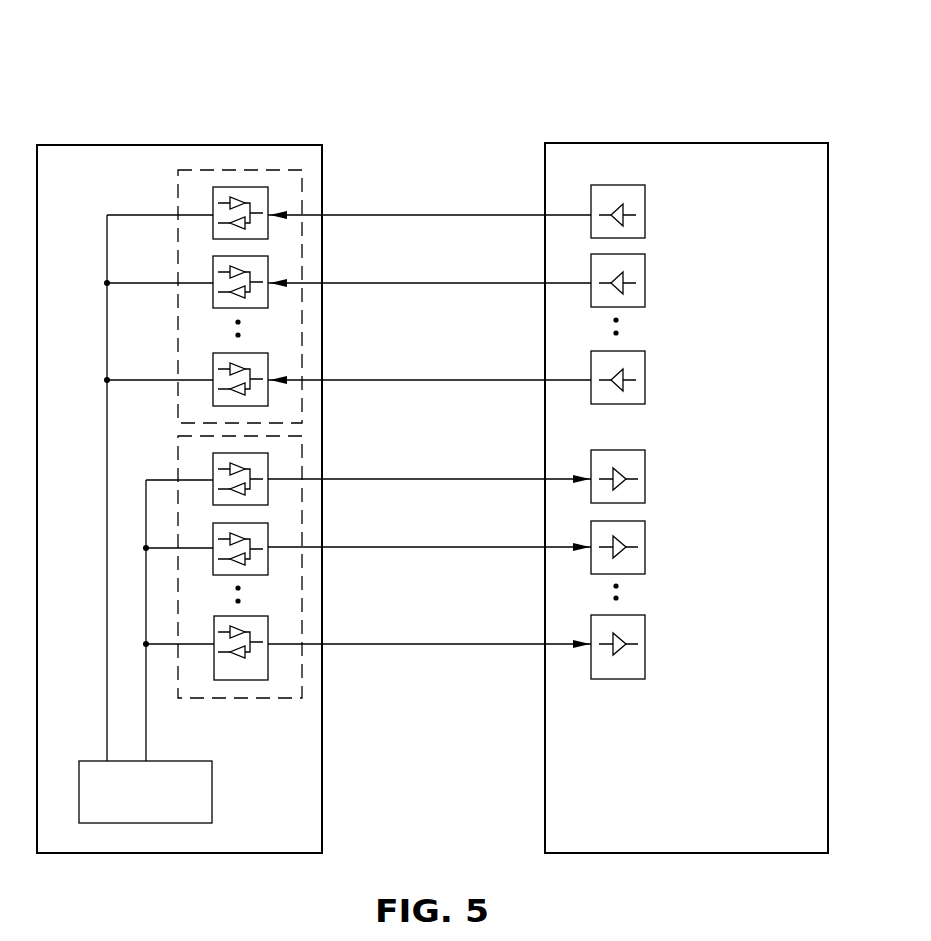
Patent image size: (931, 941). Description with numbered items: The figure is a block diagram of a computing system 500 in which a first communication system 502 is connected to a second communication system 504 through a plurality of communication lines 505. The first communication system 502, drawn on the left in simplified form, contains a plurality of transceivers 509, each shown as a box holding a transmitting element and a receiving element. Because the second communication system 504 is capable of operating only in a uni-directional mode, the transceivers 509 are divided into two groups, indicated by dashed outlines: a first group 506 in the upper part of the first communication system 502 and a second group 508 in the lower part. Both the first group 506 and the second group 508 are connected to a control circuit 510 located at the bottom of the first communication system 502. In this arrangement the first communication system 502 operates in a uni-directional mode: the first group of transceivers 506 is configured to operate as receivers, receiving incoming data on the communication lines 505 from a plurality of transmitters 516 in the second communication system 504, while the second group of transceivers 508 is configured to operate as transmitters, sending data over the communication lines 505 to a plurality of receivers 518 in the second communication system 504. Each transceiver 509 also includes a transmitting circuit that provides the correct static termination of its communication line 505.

The computing system 500 is at (740, 66).
The first communication system 502 is at (176, 145).
The second communication system 504 is at (684, 143).
The communication lines 505 is at (440, 176).
The first group of transceivers 506 is at (176, 197).
The second group of transceivers 508 is at (176, 462).
The transceiver 509 is at (322, 297).
The control circuit 510 is at (214, 791).
The transmitters 516 is at (672, 207).
The receivers 518 is at (674, 473).